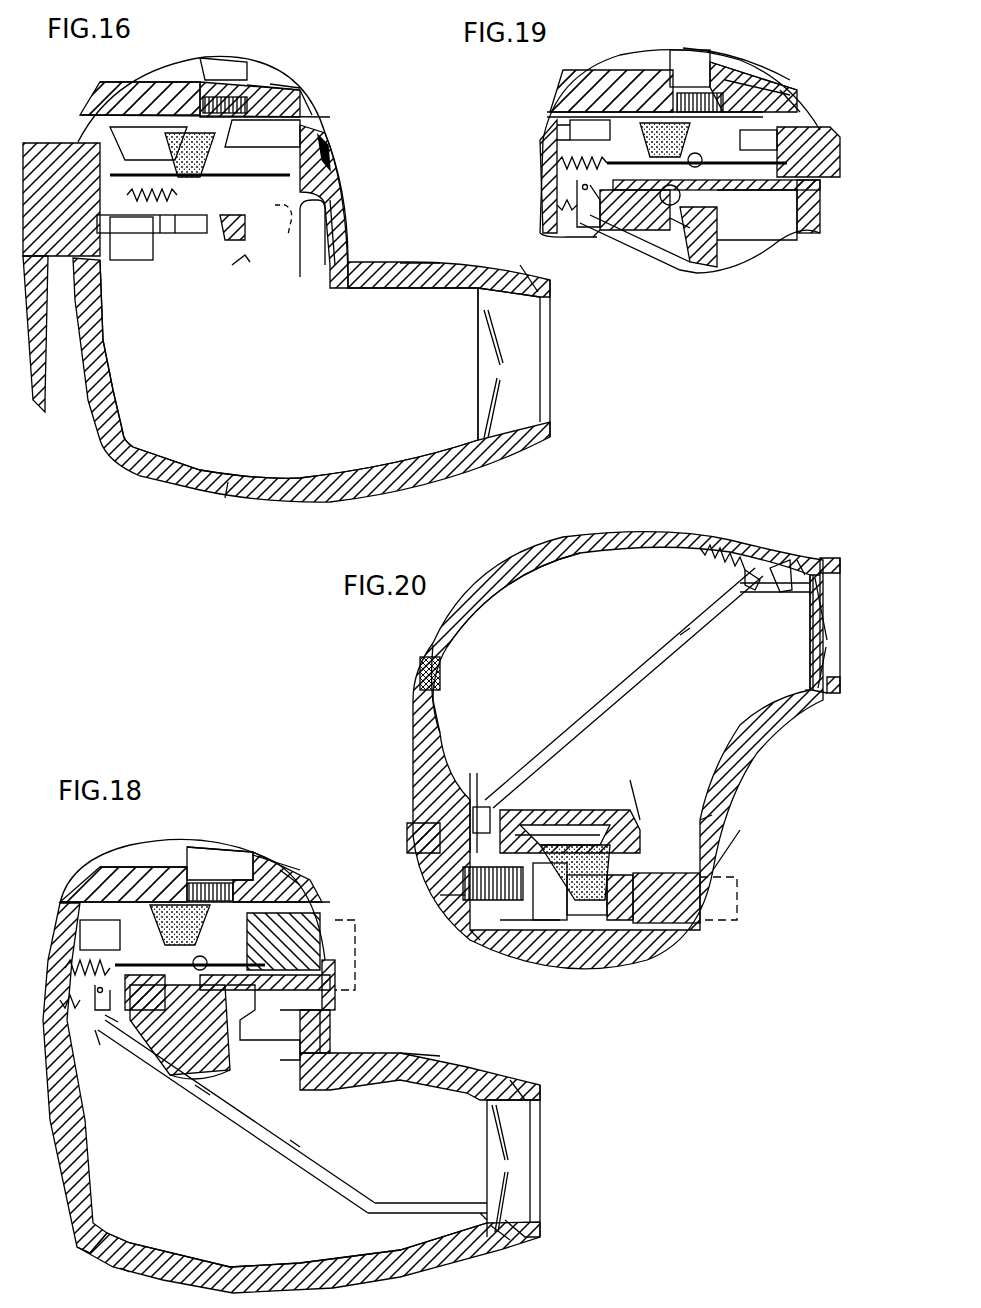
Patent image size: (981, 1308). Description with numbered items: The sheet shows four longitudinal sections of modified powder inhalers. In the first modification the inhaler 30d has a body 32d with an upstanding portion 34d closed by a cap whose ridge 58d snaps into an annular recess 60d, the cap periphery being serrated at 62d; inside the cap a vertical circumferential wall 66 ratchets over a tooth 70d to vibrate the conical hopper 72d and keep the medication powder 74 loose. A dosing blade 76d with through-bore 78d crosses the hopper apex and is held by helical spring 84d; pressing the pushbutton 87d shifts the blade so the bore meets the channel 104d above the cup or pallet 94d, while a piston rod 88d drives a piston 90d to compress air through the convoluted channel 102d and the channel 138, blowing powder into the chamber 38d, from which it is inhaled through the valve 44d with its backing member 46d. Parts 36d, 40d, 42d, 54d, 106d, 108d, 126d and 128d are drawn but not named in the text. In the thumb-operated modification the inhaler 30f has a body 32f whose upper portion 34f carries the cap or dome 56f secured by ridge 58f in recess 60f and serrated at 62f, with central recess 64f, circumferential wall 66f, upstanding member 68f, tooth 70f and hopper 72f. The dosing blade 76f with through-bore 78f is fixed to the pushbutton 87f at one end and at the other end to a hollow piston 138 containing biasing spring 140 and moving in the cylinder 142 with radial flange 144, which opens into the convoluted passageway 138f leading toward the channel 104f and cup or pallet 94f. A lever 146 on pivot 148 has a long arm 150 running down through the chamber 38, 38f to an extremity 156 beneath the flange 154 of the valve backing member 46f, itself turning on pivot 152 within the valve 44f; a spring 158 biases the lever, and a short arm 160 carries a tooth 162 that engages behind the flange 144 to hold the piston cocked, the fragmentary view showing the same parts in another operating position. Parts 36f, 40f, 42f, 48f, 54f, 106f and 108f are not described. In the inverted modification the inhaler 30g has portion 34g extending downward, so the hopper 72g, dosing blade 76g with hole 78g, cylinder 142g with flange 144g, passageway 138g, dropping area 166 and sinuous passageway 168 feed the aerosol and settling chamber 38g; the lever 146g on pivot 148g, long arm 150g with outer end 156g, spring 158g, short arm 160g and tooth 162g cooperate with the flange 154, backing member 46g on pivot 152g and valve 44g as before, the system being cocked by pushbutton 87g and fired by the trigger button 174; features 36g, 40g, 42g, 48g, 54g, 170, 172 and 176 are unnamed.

In FIG. 16, the inhaler 30d is at (155, 492).
In FIG. 16, the inhaler body 32d is at (228, 500).
In FIG. 16, the upstanding portion 34d is at (340, 164).
In FIG. 16, the top wall 36d is at (406, 262).
In FIG. 16, the chamber 38d is at (298, 398).
In FIG. 16, the pillar 40d is at (346, 182).
In FIG. 16, the seal 42d is at (336, 150).
In FIG. 16, the valve 44d is at (500, 412).
In FIG. 16, the backing member or spider 46d is at (484, 328).
In FIG. 16, the window frame 54d is at (520, 264).
In FIG. 16, the upstanding ridge 58d is at (312, 98).
In FIG. 16, the annular recess 60d is at (305, 84).
In FIG. 16, the serrated periphery 62d is at (100, 95).
In FIG. 16, the vertical circumferential wall 66 is at (225, 60).
In FIG. 16, the tooth 70d is at (270, 70).
In FIG. 16, the conical hopper 72d is at (155, 88).
In FIG. 16, the medication powder 74 is at (162, 152).
In FIG. 19, the medication powder 74 is at (650, 110).
In FIG. 20, the medication powder 74 is at (598, 840).
In FIG. 18, the medication powder 74 is at (170, 900).
In FIG. 16, the dosing blade 76d is at (130, 190).
In FIG. 16, the through-bore 78d is at (262, 133).
In FIG. 16, the helical spring 84d is at (110, 178).
In FIG. 16, the pushbutton 87d is at (45, 142).
In FIG. 16, the piston rod 88d is at (152, 262).
In FIG. 16, the piston 90d is at (180, 262).
In FIG. 16, the cup or pallet 94d is at (235, 258).
In FIG. 16, the convoluted channel 102d is at (290, 250).
In FIG. 16, the channel 104d is at (234, 265).
In FIG. 16, the layer 106d is at (245, 80).
In FIG. 16, the layer 108d is at (262, 88).
In FIG. 16, the rib 126d is at (352, 204).
In FIG. 16, the leg 128d is at (42, 410).
In FIG. 16, the hollow piston 138 is at (290, 232).
In FIG. 19, the hollow piston 138 is at (653, 191).
In FIG. 19, the upper portion of the body 34f is at (548, 138).
In FIG. 18, the upper portion of the body 34f is at (60, 905).
In FIG. 19, the seal 42f is at (825, 215).
In FIG. 18, the seal 42f is at (337, 982).
In FIG. 19, the top cap or dome 56f is at (700, 52).
In FIG. 18, the top cap or dome 56f is at (200, 845).
In FIG. 19, the upstanding ridge 58f is at (825, 140).
In FIG. 18, the upstanding ridge 58f is at (300, 898).
In FIG. 19, the annular recess 60f is at (795, 100).
In FIG. 18, the annular recess 60f is at (290, 885).
In FIG. 19, the central recess 64f is at (725, 65).
In FIG. 19, the vertical circumferential wall 66f is at (690, 68).
In FIG. 18, the vertical circumferential wall 66f is at (225, 850).
In FIG. 19, the upstanding member 68f is at (745, 75).
In FIG. 19, the tooth 70f is at (760, 78).
In FIG. 18, the tooth 70f is at (280, 868).
In FIG. 19, the conical hopper 72f is at (615, 80).
In FIG. 18, the conical hopper 72f is at (140, 870).
In FIG. 19, the through-bore 78f is at (717, 232).
In FIG. 18, the through-bore 78f is at (180, 1030).
In FIG. 19, the pushbutton 87f is at (812, 122).
In FIG. 19, the cup or pallet 94f is at (697, 274).
In FIG. 18, the cup or pallet 94f is at (211, 1064).
In FIG. 19, the channel 104f is at (635, 210).
In FIG. 18, the channel 104f is at (269, 1039).
In FIG. 19, the layer 108f is at (760, 85).
In FIG. 18, the layer 108f is at (262, 855).
In FIG. 19, the convoluted passageway 138f is at (758, 140).
In FIG. 18, the convoluted passageway 138f is at (200, 1090).
In FIG. 19, the biasing spring 140 is at (557, 160).
In FIG. 18, the biasing spring 140 is at (100, 933).
In FIG. 19, the cylinder 142 is at (590, 130).
In FIG. 18, the cylinder 142 is at (144, 989).
In FIG. 19, the radial skirt or flange 144 is at (557, 128).
In FIG. 18, the radial skirt or flange 144 is at (65, 968).
In FIG. 19, the lever 146 is at (590, 252).
In FIG. 18, the lever 146 is at (200, 1100).
In FIG. 19, the pivot 148 is at (575, 190).
In FIG. 18, the pivot 148 is at (93, 985).
In FIG. 19, the long arm 150 is at (598, 240).
In FIG. 18, the long arm 150 is at (300, 1145).
In FIG. 19, the spring 158 is at (557, 210).
In FIG. 18, the spring 158 is at (105, 1015).
In FIG. 19, the short arm 160 is at (665, 221).
In FIG. 18, the short arm 160 is at (115, 1030).
In FIG. 19, the tooth 162 is at (557, 170).
In FIG. 18, the tooth 162 is at (85, 1000).
In FIG. 19, the pillar 40f is at (757, 215).
In FIG. 18, the pillar 40f is at (295, 1037).
In FIG. 20, the inhaler 30g is at (750, 758).
In FIG. 20, the top wall 36g is at (793, 555).
In FIG. 20, the aerosol and settling chamber 38g is at (605, 618).
In FIG. 20, the window frame 54g is at (825, 556).
In FIG. 20, the valve 44g is at (808, 630).
In FIG. 20, the backing member or spider 46g is at (821, 633).
In FIG. 20, the frame corner 48g is at (825, 697).
In FIG. 20, the outer end of long arm 156g is at (740, 550).
In FIG. 20, the lever 172 is at (775, 560).
In FIG. 20, the spring 158g is at (700, 575).
In FIG. 20, the flange or arm 154 is at (750, 595).
In FIG. 18, the flange or arm 154 is at (480, 1202).
In FIG. 20, the lever 146g is at (583, 712).
In FIG. 20, the long arm 150g is at (682, 640).
In FIG. 20, the pivot 152g is at (808, 690).
In FIG. 20, the seal 42g is at (420, 678).
In FIG. 20, the pillar 40g is at (440, 680).
In FIG. 20, the pivot 148g is at (485, 800).
In FIG. 20, the pin 176 is at (470, 790).
In FIG. 20, the manual release pushbutton 174 is at (410, 825).
In FIG. 20, the short arm 160g is at (570, 821).
In FIG. 20, the conical hopper 72g is at (560, 825).
In FIG. 20, the wall 170 is at (632, 800).
In FIG. 20, the sinuous passageway 168 is at (702, 825).
In FIG. 20, the portion of the body 34g is at (705, 845).
In FIG. 20, the tooth 162g is at (460, 870).
In FIG. 20, the radial skirt or flange 144g is at (440, 895).
In FIG. 20, the cylinder 142g is at (545, 925).
In FIG. 20, the dosing blade 76g is at (580, 920).
In FIG. 20, the hole in dosing blade 78g is at (618, 925).
In FIG. 20, the passageway 138g is at (515, 925).
In FIG. 20, the dropping area 166 is at (645, 925).
In FIG. 20, the pushbutton 87g is at (712, 922).
In FIG. 18, the inhaler 30f is at (87, 1248).
In FIG. 18, the inhaler body 32f is at (133, 1268).
In FIG. 18, the top wall 36f is at (420, 1052).
In FIG. 18, the chamber 38f is at (215, 1197).
In FIG. 18, the valve 44f is at (505, 1150).
In FIG. 18, the backing member or spider 46f is at (490, 1122).
In FIG. 18, the frame corner 48f is at (545, 1238).
In FIG. 18, the window frame 54f is at (525, 1082).
In FIG. 18, the pivot 152 is at (495, 1245).
In FIG. 18, the outer end of long arm 156 is at (478, 1218).
In FIG. 18, the chamber 38 is at (115, 1040).
In FIG. 18, the serrated periphery 62f is at (105, 868).
In FIG. 18, the layer 106f is at (278, 865).
In FIG. 18, the dosing blade 76f is at (252, 1012).